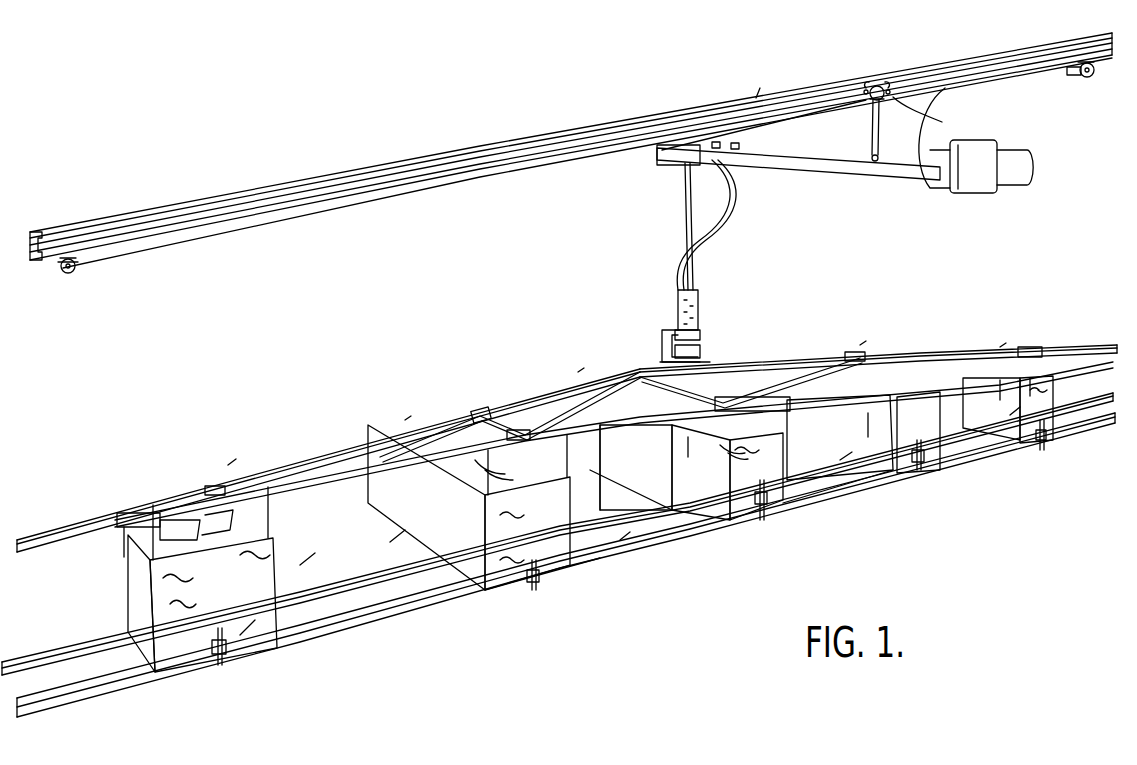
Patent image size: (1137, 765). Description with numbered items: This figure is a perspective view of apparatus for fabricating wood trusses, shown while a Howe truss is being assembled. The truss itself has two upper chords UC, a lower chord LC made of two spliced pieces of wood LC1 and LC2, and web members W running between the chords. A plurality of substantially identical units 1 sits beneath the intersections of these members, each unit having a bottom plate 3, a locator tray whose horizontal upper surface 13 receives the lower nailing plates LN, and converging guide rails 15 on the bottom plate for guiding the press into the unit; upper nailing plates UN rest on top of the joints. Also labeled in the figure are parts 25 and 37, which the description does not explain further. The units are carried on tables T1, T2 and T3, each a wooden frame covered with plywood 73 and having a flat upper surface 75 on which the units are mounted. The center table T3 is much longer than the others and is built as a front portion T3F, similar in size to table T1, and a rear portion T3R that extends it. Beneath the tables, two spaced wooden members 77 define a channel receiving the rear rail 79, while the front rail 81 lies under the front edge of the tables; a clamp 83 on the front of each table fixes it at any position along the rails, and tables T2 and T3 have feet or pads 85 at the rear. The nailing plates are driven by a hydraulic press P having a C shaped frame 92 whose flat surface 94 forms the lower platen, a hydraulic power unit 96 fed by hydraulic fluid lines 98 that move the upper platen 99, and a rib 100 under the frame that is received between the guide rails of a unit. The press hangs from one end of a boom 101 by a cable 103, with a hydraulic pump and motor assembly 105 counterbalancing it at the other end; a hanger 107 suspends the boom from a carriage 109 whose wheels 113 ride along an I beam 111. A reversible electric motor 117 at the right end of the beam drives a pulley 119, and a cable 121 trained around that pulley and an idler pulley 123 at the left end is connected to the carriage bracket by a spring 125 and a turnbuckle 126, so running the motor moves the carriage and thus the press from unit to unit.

The unit 1 is at (145, 550).
The bottom plate 3 is at (333, 527).
The upper surface 13 is at (215, 531).
The guide rails 15 is at (207, 545).
The tray hanger 25 is at (475, 470).
The node 37 is at (235, 458).
The plywood 73 is at (128, 615).
The upper surface 75 is at (378, 425).
The spaced wooden members 77 is at (685, 480).
The rear rail 79 is at (357, 586).
The front rail 81 is at (363, 628).
The clamp 83 is at (222, 668).
The feet or pads 85 is at (370, 518).
The C shaped frame 92 is at (642, 326).
The lower platen 94 is at (702, 351).
The hydraulic power unit 96 is at (690, 290).
The hydraulic fluid lines 98 is at (722, 210).
The upper platen 99 is at (702, 336).
The rib 100 is at (660, 362).
The boom 101 is at (835, 168).
The cable 103 is at (683, 198).
The hydraulic pump and motor assembly 105 is at (992, 206).
The hanger 107 is at (880, 130).
The carriage 109 is at (876, 84).
The I beam 111 is at (741, 82).
The wheels 113 is at (866, 88).
The reversible electric motor 117 is at (1094, 70).
The pulley 119 is at (1087, 79).
The cable 121 is at (300, 232).
The idler pulley 123 is at (75, 272).
The spring 125 is at (936, 116).
The turnbuckle 126 is at (854, 108).
The press P is at (730, 317).
The upper chords UC is at (307, 450).
The lower chord LC is at (337, 497).
The lower chord piece LC1 is at (607, 464).
The lower chord piece LC2 is at (819, 426).
The upper nailing plates UN is at (208, 486).
The lower nailing plates LN is at (170, 500).
The web members W is at (500, 412).
The table T1 is at (240, 635).
The table T2 is at (505, 580).
The center table T3 is at (740, 520).
The front portion T3F is at (720, 530).
The rear portion T3R is at (591, 475).